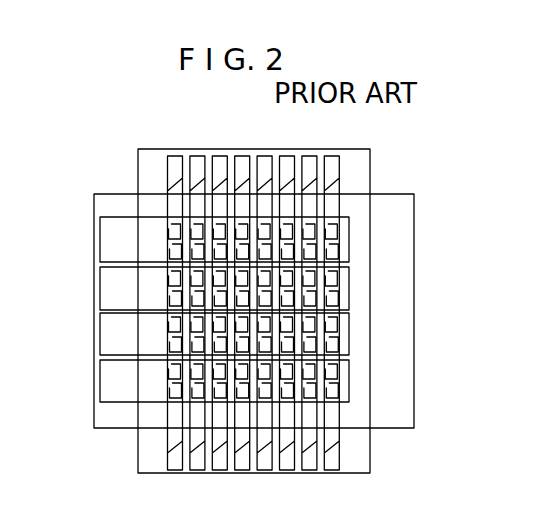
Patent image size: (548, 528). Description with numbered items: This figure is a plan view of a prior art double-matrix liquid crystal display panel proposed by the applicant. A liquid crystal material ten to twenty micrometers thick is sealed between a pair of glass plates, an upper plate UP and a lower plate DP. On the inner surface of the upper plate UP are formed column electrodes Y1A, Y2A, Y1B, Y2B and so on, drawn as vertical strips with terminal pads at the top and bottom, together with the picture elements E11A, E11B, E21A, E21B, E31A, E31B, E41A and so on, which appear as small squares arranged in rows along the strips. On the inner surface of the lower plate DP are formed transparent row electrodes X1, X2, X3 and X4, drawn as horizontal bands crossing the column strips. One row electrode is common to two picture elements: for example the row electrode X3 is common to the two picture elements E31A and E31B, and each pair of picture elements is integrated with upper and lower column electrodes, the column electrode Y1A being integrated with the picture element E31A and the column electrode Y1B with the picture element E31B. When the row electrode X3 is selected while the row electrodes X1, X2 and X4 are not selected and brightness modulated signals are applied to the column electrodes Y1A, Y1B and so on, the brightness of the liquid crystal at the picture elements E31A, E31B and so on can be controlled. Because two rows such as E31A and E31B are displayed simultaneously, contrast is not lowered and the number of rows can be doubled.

The upper plate UP is at (362, 168).
The lower plate DP is at (406, 269).
The row electrode X1 is at (92, 221).
The row electrode X2 is at (90, 288).
The row electrode X3 is at (92, 327).
The row electrode X4 is at (92, 367).
The column electrode Y1A is at (164, 147).
The column electrode Y1B is at (166, 465).
The column electrode Y2A is at (189, 146).
The column electrode Y2B is at (184, 465).
The picture element E11A is at (162, 218).
The picture element E11B is at (162, 240).
The picture element E21A is at (161, 269).
The picture element E21B is at (162, 291).
The picture element E31A is at (161, 313).
The picture element E31B is at (162, 332).
The picture element E41A is at (161, 360).